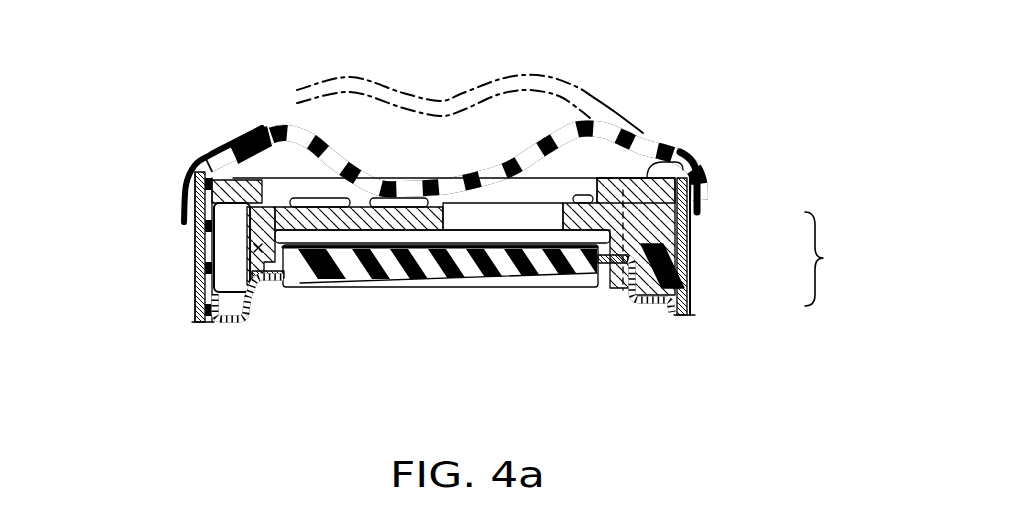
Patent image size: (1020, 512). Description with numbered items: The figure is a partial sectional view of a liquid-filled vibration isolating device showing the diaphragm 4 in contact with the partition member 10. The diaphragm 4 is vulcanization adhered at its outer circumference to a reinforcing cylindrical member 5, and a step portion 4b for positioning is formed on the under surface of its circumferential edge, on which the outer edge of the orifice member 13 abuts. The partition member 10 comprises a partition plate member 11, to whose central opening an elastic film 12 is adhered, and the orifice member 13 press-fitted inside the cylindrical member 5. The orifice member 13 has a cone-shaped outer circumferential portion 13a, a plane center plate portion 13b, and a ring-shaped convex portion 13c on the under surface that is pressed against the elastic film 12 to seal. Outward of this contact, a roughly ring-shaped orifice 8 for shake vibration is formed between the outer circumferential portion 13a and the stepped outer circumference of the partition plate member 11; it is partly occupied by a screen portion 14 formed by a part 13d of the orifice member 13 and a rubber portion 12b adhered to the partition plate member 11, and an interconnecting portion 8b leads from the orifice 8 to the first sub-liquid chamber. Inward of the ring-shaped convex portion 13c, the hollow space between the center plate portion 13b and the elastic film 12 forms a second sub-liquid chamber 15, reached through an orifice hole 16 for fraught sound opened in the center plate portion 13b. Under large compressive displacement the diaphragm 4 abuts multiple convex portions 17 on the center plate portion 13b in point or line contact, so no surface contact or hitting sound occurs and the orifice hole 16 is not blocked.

The diaphragm 4 is at (431, 187).
The step portion 4b is at (188, 163).
The reinforcing cylindrical member 5 is at (197, 252).
The orifice 8 is at (227, 240).
The interconnecting portion 8b is at (257, 185).
The partition member 10 is at (283, 310).
The partition plate member 11 is at (648, 303).
The elastic film 12 is at (517, 267).
The rubber portion 12b is at (655, 262).
The orifice member 13 is at (633, 180).
The outer circumferential portion 13a is at (617, 160).
The center plate portion 13b is at (345, 210).
The ring-shaped convex portion 13c is at (258, 248).
The part of orifice member 13d is at (655, 225).
The screen portion 14 is at (834, 259).
The second sub-liquid chamber 15 is at (462, 231).
The orifice hole 16 is at (510, 203).
The convex portions 17 is at (383, 193).